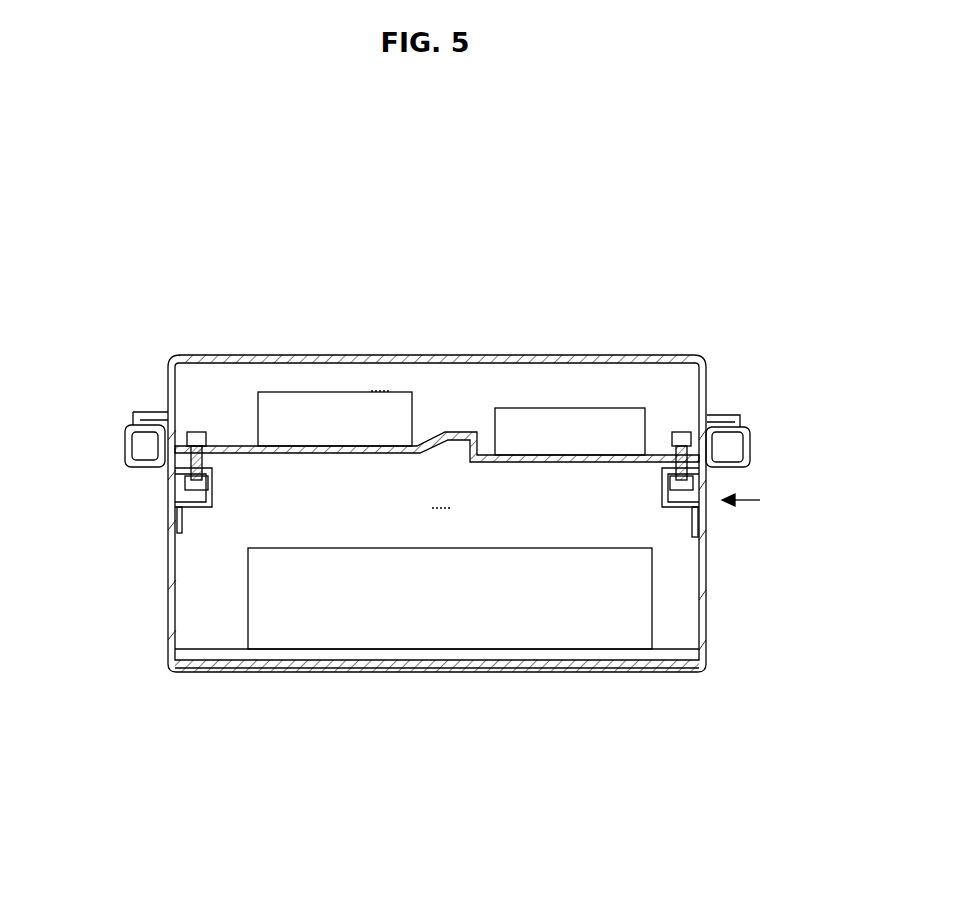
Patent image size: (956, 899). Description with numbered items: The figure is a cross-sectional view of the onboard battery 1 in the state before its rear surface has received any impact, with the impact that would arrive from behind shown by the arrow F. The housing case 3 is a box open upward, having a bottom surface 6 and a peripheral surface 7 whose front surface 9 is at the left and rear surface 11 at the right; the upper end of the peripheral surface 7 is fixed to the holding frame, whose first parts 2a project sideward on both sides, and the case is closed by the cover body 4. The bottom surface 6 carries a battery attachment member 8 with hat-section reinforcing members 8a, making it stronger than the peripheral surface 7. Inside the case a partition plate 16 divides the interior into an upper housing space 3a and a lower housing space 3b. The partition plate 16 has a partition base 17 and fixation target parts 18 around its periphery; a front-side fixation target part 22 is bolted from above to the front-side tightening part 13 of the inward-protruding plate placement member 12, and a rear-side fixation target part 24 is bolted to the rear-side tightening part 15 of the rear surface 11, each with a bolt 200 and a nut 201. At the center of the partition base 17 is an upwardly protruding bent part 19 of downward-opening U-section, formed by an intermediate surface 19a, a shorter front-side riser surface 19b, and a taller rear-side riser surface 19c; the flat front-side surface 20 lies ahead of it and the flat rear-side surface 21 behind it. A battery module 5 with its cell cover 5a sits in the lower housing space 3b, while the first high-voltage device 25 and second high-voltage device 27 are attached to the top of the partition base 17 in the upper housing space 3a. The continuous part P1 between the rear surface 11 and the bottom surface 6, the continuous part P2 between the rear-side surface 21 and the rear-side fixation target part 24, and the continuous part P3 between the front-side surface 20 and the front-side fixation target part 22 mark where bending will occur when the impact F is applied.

The onboard battery 1 is at (727, 238).
The first part 2a is at (125, 452).
The housing case 3 is at (441, 586).
The upper housing space 3a is at (379, 381).
The lower housing space 3b is at (440, 498).
The cover body 4 is at (280, 356).
The battery module 5 is at (420, 640).
The cell cover 5a is at (482, 640).
The bottom surface 6 is at (547, 674).
The peripheral surface 7 is at (170, 612).
The battery attachment member 8 is at (342, 674).
The reinforcing member 8a is at (382, 660).
The front surface 9 is at (168, 648).
The rear surface 11 is at (705, 628).
The plate placement member 12 is at (215, 505).
The front-side tightening part 13 is at (198, 468).
The rear-side tightening part 15 is at (690, 512).
The partition plate 16 is at (238, 446).
The partition base 17 is at (418, 445).
The fixation target part 18 is at (410, 402).
The bent part 19 is at (452, 341).
The intermediate surface 19a is at (460, 436).
The front-side riser surface 19b is at (432, 440).
The rear-side riser surface 19c is at (474, 445).
The front-side surface 20 is at (215, 452).
The rear-side surface 21 is at (640, 445).
The front-side fixation target part 22 is at (193, 482).
The rear-side fixation target part 24 is at (680, 469).
The first high-voltage device 25 is at (320, 406).
The second high-voltage device 27 is at (545, 425).
The bolt 200 is at (168, 373).
The nut 201 is at (183, 483).
The continuous part P1 is at (705, 658).
The continuous part P2 is at (697, 535).
The continuous part P3 is at (190, 432).
The impact F is at (768, 503).